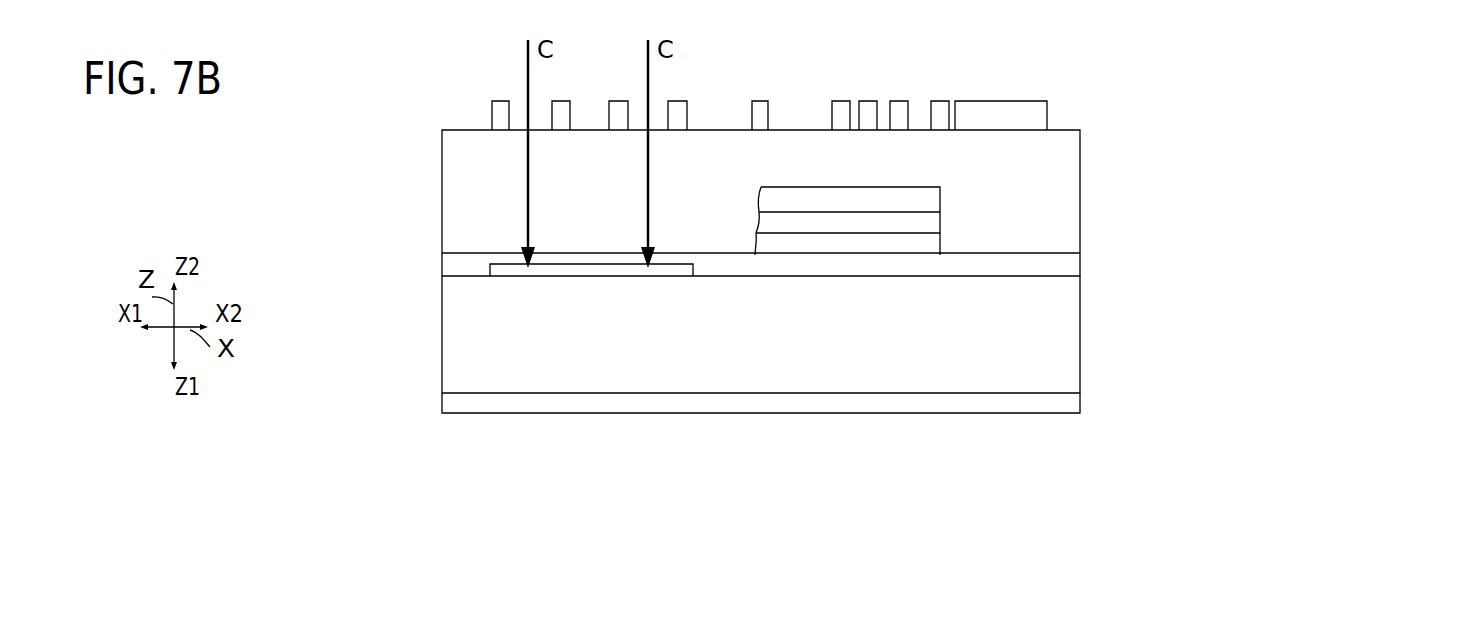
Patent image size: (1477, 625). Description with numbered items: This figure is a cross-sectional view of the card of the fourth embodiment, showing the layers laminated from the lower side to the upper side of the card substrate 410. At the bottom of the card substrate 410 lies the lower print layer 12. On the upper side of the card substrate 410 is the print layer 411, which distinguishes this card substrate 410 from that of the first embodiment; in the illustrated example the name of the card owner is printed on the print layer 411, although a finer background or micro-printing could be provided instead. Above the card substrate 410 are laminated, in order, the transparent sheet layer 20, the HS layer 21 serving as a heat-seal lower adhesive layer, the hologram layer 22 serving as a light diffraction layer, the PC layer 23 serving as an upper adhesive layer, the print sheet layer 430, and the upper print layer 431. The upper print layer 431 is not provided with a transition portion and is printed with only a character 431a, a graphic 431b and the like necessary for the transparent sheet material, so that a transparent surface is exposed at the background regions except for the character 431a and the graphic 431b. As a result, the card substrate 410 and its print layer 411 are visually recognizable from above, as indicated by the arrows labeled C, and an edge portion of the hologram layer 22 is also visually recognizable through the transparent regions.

The upper print layer 431 is at (932, 72).
The character 431a is at (830, 86).
The graphic 431b is at (995, 115).
The print sheet layer 430 is at (1065, 150).
The PC layer 23 is at (925, 198).
The hologram layer 22 is at (925, 223).
The HS layer 21 is at (925, 245).
The transparent sheet layer 20 is at (1057, 263).
The print layer 411 is at (487, 265).
The card substrate 410 is at (1020, 353).
The lower print layer 12 is at (1062, 403).